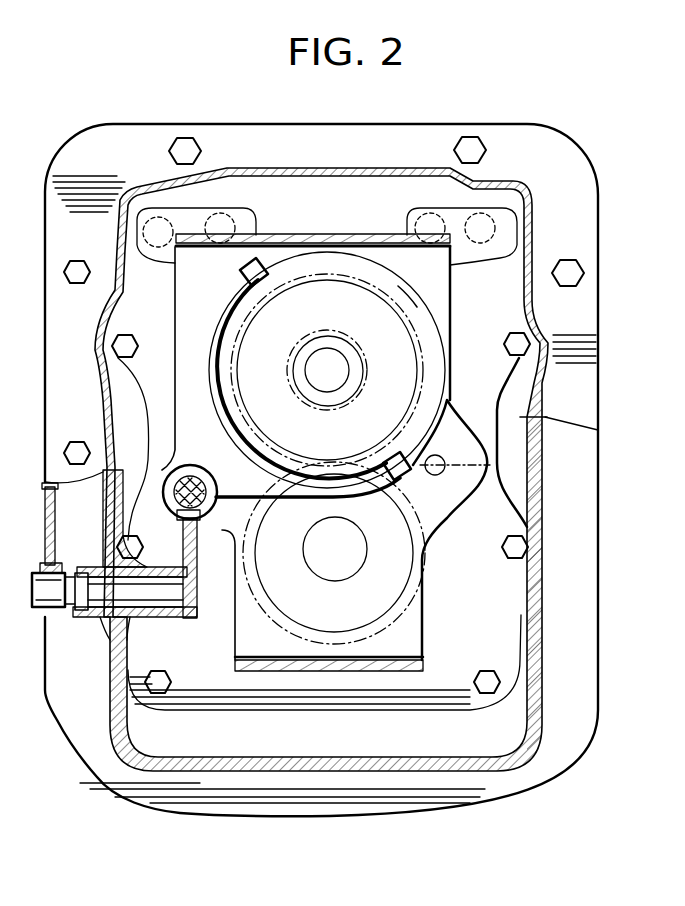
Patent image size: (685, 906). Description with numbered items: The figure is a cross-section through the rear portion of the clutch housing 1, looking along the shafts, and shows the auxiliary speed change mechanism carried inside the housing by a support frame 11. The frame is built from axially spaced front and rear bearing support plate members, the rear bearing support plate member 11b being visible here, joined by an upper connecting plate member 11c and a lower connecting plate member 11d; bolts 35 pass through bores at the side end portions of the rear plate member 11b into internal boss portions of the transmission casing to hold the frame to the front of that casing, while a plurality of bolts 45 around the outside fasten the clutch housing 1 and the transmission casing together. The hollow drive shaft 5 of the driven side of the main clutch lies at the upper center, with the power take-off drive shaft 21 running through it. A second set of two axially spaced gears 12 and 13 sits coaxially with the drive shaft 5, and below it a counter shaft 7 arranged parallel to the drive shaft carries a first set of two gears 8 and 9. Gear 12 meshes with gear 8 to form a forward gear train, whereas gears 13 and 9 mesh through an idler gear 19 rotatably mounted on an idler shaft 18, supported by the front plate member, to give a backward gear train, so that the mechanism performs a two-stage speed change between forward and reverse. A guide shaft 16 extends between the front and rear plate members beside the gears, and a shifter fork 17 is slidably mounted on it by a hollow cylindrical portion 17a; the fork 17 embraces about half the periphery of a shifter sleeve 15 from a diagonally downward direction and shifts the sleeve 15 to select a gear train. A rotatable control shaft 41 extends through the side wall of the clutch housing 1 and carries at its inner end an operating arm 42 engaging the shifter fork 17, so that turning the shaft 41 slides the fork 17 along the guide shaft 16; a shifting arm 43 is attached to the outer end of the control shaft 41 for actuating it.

The clutch housing 1 is at (540, 690).
The support frame 11 is at (452, 330).
The rear bearing support plate member 11b is at (427, 617).
The upper connecting plate member 11c is at (277, 246).
The lower connecting plate member 11d is at (355, 672).
The gear 12 is at (327, 306).
The gear 13 is at (332, 280).
The shifter sleeve 15 is at (410, 300).
The drive shaft 5 is at (294, 355).
The drive shaft 21 is at (338, 370).
The hollow cylindrical portion 17a is at (185, 465).
The shifter fork 17 is at (366, 488).
The guide shaft 16 is at (215, 480).
The idler gear 19 is at (456, 404).
The idler shaft 18 is at (447, 465).
The counter shaft 7 is at (333, 552).
The gear 8 is at (412, 617).
The gear 9 is at (290, 617).
The bolts 45 is at (572, 270).
The bolts 35 is at (487, 690).
The shifting arm 43 is at (80, 508).
The operating arm 42 is at (186, 550).
The control shaft 41 is at (167, 620).